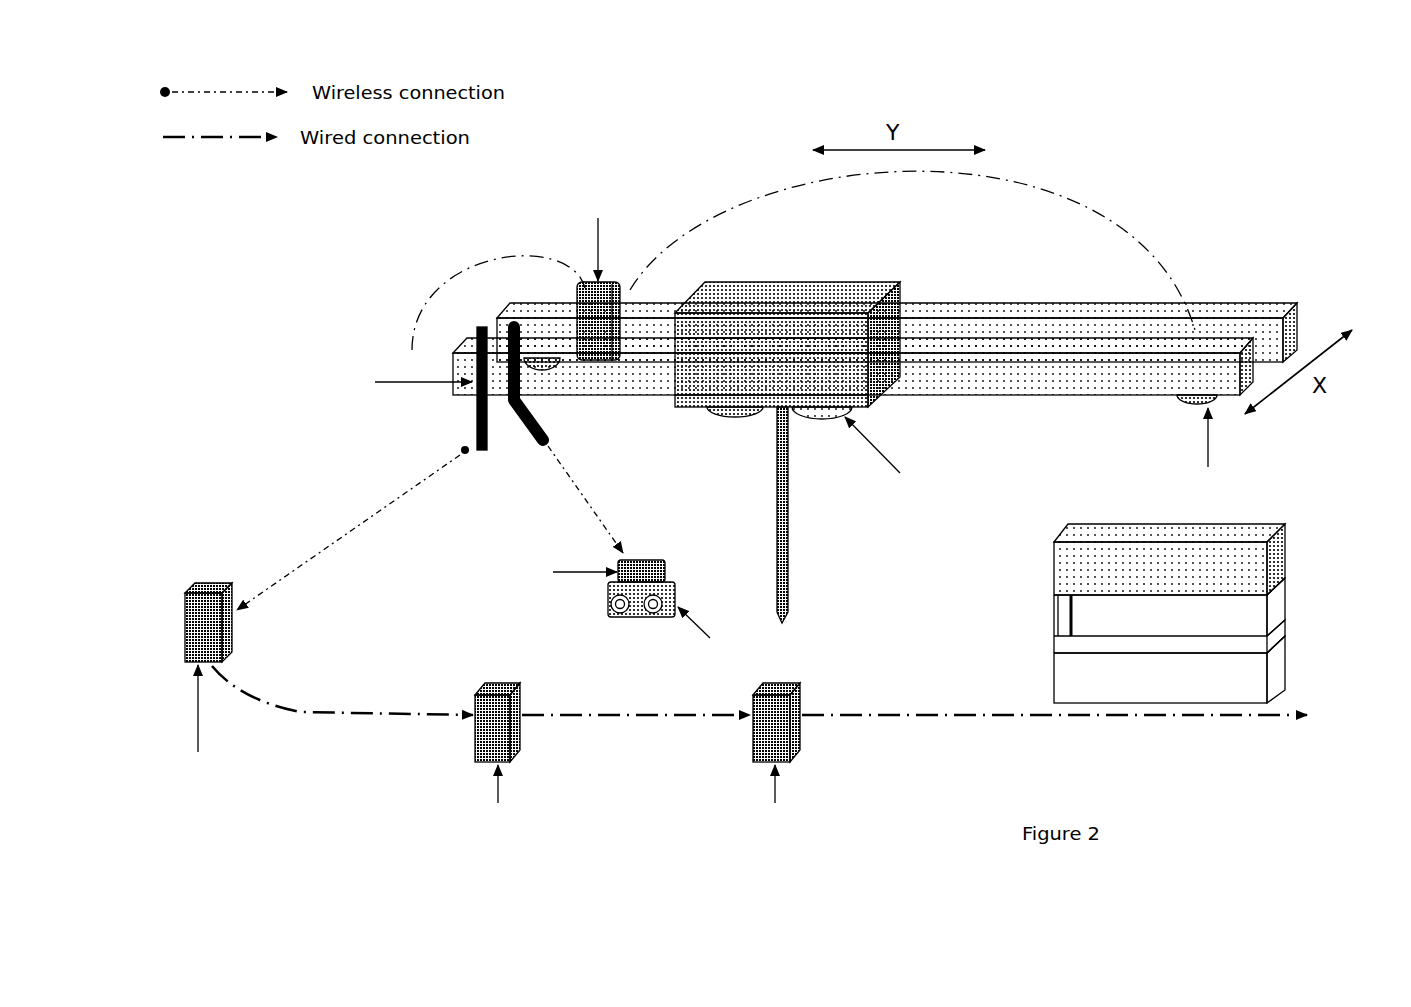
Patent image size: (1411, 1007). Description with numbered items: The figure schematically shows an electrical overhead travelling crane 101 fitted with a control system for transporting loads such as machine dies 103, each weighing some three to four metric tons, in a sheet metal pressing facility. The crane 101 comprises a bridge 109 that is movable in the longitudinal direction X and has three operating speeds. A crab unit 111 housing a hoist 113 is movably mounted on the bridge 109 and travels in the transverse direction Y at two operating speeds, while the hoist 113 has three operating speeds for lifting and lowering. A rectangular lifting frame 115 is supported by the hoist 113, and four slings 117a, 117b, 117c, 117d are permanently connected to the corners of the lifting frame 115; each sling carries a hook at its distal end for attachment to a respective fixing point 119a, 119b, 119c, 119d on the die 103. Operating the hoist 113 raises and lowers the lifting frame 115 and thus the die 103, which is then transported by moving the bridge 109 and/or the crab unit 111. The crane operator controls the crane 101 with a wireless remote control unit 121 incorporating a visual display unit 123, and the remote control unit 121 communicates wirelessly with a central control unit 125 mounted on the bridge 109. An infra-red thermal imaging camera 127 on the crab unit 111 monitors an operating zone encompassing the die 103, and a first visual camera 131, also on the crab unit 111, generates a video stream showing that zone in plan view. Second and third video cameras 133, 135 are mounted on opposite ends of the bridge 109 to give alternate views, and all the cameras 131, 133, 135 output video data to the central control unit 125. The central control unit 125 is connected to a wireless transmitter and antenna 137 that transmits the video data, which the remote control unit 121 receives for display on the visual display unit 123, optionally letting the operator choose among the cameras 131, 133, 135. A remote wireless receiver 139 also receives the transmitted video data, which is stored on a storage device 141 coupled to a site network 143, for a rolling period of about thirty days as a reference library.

The electrical overhead travelling crane 101 is at (1193, 135).
The die 103 is at (1162, 692).
The bridge 109 is at (1027, 308).
The crab unit 111 is at (833, 290).
The hoist 113 is at (787, 497).
The lifting frame 115 is at (1218, 530).
The sling 117a is at (1060, 603).
The sling 117b is at (1278, 590).
The sling 117c is at (1058, 632).
The sling 117d is at (1270, 618).
The fixing point 119a is at (1073, 637).
The fixing point 119b is at (1270, 647).
The fixing point 119c is at (1068, 640).
The fixing point 119d is at (1270, 653).
The wireless remote control unit 121 is at (610, 603).
The visual display unit 123 is at (662, 562).
The central control unit 125 is at (603, 280).
The infra-red thermal imaging camera 127 is at (847, 410).
The first visual camera 131 is at (725, 417).
The second video camera 133 is at (543, 363).
The third video camera 135 is at (1185, 400).
The wireless transmitter and antenna 137 is at (477, 408).
The remote wireless receiver 139 is at (190, 627).
The storage device 141 is at (475, 747).
The site network 143 is at (752, 747).